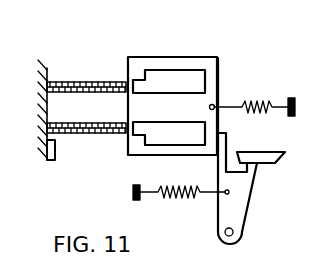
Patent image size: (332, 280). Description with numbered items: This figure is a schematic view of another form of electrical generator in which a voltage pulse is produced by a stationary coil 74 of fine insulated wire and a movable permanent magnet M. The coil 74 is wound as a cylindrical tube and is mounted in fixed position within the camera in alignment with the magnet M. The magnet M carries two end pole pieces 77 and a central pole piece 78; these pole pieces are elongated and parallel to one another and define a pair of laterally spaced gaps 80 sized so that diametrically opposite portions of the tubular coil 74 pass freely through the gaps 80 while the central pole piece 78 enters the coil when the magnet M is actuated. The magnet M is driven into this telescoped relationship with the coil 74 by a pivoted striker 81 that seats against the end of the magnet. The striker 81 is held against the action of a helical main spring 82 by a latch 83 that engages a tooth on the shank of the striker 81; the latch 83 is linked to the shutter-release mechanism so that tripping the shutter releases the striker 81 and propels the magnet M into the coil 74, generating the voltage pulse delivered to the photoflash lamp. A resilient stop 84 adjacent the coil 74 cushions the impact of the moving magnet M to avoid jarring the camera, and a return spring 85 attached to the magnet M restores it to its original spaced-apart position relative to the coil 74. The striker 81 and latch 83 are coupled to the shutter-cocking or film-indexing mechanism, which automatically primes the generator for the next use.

The stationary coil 74 is at (62, 82).
The end pole pieces 77 is at (158, 57).
The central pole piece 78 is at (180, 118).
The gaps 80 is at (135, 88).
The pivoted striker 81 is at (245, 218).
The helical main spring 82 is at (187, 200).
The latch 83 is at (260, 152).
The resilient stop 84 is at (56, 148).
The return spring 85 is at (242, 100).
The movable permanent magnet M is at (244, 53).